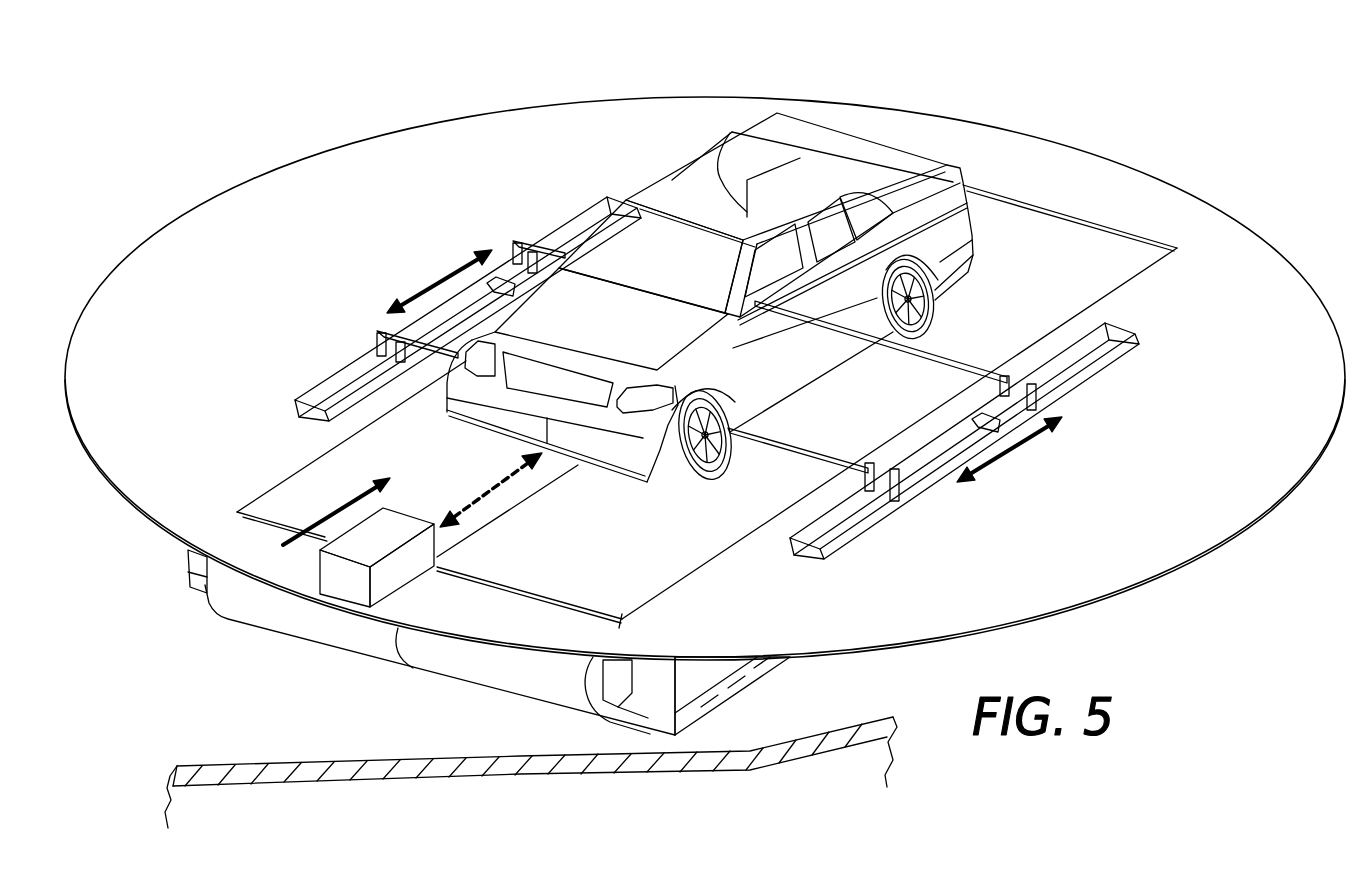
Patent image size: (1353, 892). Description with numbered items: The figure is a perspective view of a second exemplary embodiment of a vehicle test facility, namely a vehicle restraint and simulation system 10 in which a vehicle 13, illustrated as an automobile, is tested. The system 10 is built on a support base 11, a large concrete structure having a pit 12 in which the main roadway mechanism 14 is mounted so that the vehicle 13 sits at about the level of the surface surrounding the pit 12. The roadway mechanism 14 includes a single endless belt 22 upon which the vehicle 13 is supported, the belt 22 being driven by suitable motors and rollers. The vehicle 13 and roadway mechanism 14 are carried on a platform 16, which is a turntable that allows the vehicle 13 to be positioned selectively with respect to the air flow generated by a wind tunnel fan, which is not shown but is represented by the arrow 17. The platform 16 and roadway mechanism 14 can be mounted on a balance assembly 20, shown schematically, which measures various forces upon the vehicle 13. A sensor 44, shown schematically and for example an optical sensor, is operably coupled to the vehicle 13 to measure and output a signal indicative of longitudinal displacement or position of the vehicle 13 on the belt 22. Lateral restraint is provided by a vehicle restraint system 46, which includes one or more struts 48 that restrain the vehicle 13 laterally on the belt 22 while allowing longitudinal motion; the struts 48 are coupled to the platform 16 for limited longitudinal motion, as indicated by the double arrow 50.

The simulation system 10 is at (1160, 136).
The support base 11 is at (170, 778).
The pit 12 is at (350, 733).
The vehicle 13 is at (922, 133).
The main roadway mechanism 14 is at (157, 562).
The platform 16 is at (1130, 537).
The arrow 17 is at (380, 498).
The balance assembly 20 is at (727, 676).
The endless belt 22 is at (655, 553).
The sensor 44 is at (403, 568).
The vehicle restraint system 46 is at (1150, 331).
The strut 48 is at (547, 242).
The double arrow 50 is at (437, 283).